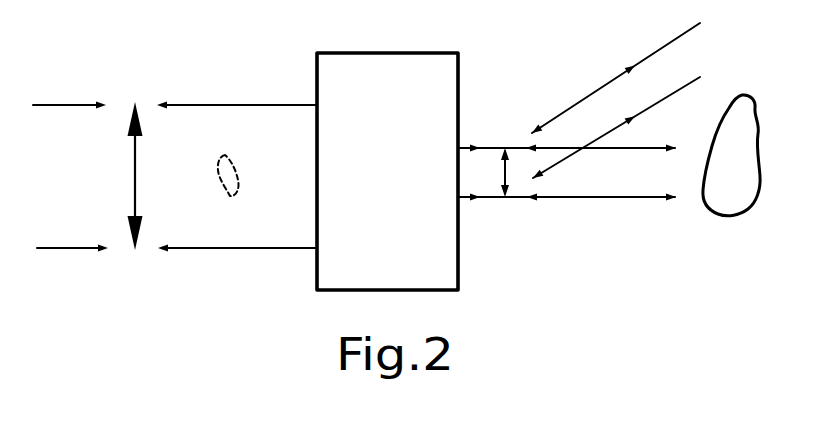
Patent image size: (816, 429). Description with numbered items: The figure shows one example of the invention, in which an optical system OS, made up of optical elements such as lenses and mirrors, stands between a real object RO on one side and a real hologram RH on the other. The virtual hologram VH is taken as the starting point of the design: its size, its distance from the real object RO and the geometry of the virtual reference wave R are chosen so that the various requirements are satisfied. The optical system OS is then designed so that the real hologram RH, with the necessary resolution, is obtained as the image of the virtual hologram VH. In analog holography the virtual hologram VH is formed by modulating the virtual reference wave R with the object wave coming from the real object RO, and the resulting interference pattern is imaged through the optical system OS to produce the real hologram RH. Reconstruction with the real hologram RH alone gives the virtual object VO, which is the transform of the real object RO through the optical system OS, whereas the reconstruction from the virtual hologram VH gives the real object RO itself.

The real hologram RH is at (132, 193).
The virtual object VO is at (228, 192).
The optical system OS is at (387, 171).
The virtual hologram VH is at (486, 172).
The virtual reference wave R is at (616, 100).
The real object RO is at (731, 173).